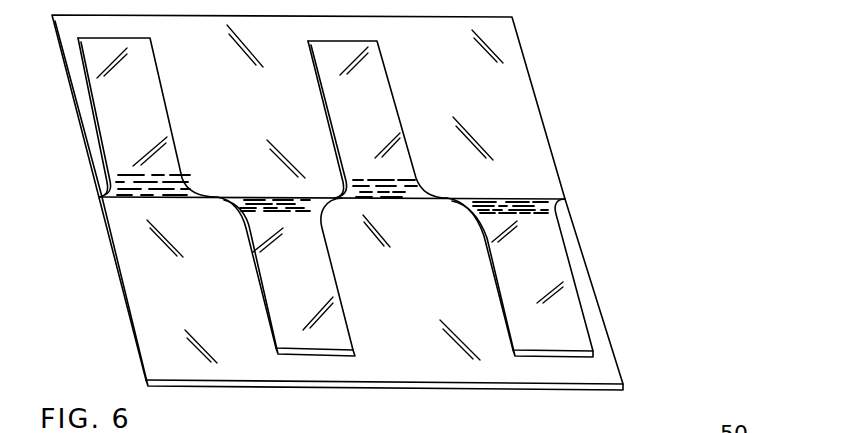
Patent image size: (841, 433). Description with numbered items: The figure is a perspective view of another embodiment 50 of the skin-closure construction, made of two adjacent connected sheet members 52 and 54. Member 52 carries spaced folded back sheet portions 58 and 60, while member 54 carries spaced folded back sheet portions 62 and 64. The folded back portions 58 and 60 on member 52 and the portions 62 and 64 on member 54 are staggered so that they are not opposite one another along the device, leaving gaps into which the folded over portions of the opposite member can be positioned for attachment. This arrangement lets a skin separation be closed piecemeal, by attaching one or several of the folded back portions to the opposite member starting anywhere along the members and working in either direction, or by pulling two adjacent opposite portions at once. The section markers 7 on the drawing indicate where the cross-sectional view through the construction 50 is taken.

The embodiment of the subject construction 50 is at (372, 198).
The sheet member 52 is at (522, 50).
The sheet member 54 is at (577, 230).
The folded back sheet portion 58 is at (142, 103).
The folded back sheet portion 60 is at (373, 107).
The folded back sheet portion 62 is at (280, 303).
The folded back sheet portion 64 is at (519, 307).
The section line 7- 7 is at (107, 281).